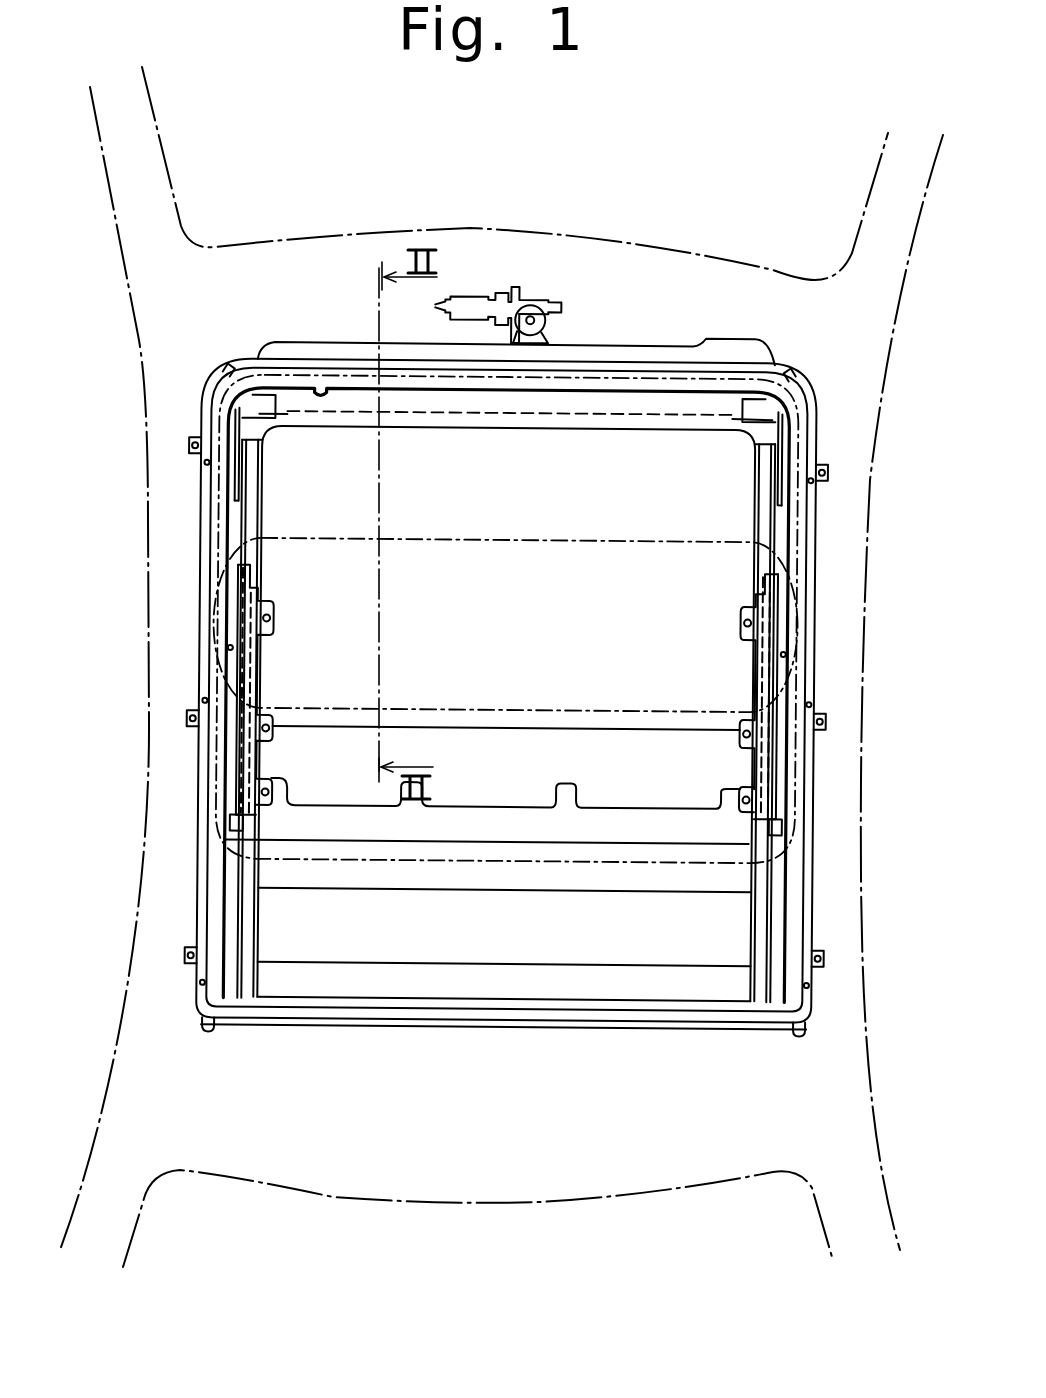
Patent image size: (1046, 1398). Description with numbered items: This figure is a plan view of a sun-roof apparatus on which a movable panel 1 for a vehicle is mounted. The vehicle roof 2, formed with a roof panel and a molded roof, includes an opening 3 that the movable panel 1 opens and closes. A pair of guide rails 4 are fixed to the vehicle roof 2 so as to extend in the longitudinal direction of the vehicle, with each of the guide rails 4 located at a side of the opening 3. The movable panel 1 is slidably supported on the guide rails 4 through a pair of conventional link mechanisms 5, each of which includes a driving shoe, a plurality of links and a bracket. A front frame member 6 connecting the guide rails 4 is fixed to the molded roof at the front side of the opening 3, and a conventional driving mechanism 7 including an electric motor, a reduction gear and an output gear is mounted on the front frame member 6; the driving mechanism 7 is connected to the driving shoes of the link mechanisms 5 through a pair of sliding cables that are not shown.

The movable panel 1 is at (455, 555).
The vehicle roof 2 is at (148, 620).
The opening 3 is at (324, 392).
The guide rails 4 is at (268, 483).
The link mechanisms 5 is at (265, 660).
The front frame member 6 is at (196, 418).
The driving mechanism 7 is at (494, 284).